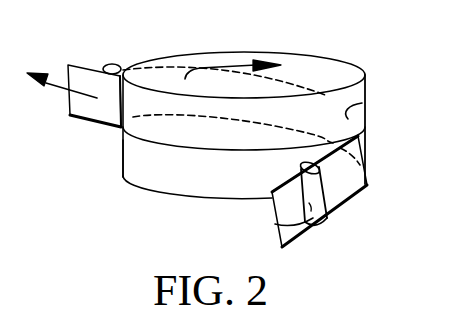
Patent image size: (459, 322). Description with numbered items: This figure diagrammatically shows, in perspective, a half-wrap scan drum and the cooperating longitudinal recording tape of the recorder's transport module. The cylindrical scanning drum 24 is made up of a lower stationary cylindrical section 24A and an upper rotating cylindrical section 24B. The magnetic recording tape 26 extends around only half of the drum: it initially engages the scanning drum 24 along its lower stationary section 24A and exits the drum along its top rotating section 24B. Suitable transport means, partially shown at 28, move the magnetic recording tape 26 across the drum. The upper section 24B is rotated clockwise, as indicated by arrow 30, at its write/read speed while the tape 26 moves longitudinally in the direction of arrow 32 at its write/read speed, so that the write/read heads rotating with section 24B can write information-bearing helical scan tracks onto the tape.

The cylindrical scanning drum 24 is at (392, 139).
The lower stationary cylindrical section 24A is at (139, 165).
The upper rotating cylindrical section 24B is at (368, 94).
The magnetic recording tape 26 is at (336, 190).
The transport means 28 is at (111, 63).
The arrow 30 is at (243, 64).
The arrow 32 is at (53, 82).